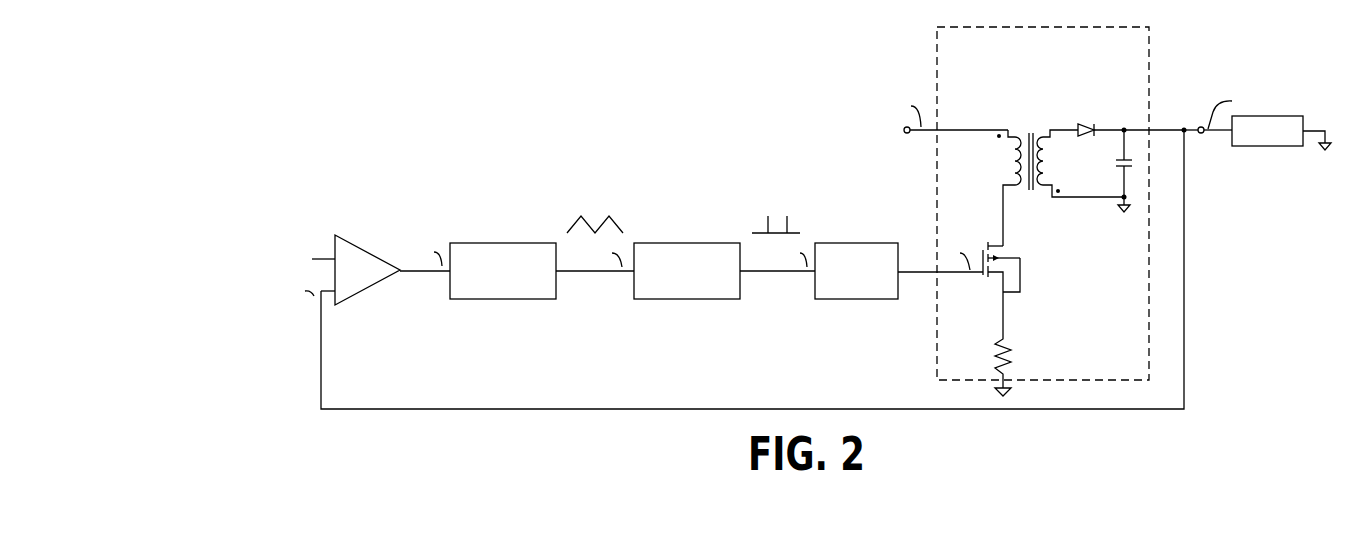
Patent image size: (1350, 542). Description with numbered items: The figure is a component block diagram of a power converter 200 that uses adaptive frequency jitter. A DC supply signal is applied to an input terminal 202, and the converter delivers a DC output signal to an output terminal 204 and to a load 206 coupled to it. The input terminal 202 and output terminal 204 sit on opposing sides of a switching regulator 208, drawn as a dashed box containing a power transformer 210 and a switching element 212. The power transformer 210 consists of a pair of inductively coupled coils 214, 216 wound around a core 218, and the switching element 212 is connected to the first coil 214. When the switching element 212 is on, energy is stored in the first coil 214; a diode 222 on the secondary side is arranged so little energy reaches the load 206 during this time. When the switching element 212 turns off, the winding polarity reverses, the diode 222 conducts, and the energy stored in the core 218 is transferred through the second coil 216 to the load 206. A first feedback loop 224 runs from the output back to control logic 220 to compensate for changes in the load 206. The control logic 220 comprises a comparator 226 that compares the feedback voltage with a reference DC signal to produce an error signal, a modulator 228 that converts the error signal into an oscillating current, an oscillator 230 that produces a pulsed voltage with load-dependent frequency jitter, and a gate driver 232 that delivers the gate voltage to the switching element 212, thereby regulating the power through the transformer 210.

The power converter 200 is at (299, 33).
The input terminal 202 is at (906, 146).
The output terminal 204 is at (1205, 148).
The load 206 is at (1275, 148).
The switching regulator 208 is at (1048, 26).
The power transformer 210 is at (1027, 90).
The switching element 212 is at (1037, 257).
The first coil 214 is at (1016, 135).
The second coil 216 is at (1048, 136).
The core 218 is at (1029, 188).
The control logic 220 is at (339, 183).
The diode 222 is at (1084, 127).
The first feedback loop 224 is at (1185, 352).
The comparator 226 is at (348, 234).
The modulator 228 is at (503, 242).
The oscillator 230 is at (693, 242).
The gate driver 232 is at (858, 242).